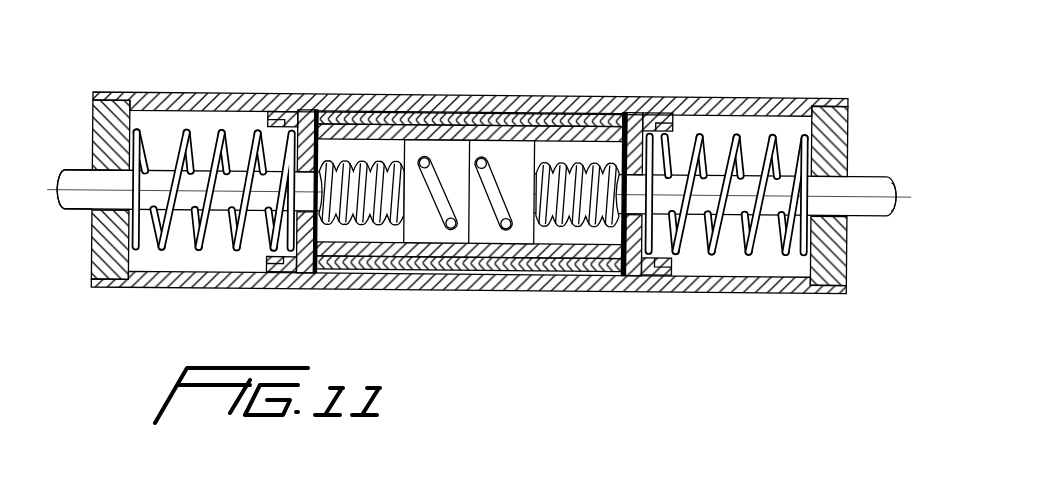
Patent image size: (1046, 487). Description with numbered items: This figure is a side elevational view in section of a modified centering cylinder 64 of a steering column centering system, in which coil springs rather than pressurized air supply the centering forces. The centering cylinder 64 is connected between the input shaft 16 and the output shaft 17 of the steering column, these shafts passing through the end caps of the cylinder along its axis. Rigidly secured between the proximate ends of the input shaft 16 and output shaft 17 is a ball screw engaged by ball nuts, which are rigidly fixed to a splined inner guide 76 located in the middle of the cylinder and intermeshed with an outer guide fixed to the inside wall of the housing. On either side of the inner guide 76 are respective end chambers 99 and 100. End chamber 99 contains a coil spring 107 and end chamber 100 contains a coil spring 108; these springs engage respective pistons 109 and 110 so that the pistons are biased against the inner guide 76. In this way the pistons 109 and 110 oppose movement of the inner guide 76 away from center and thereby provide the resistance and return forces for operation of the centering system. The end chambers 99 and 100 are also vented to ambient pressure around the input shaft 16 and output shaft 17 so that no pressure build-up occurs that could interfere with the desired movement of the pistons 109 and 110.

The input shaft 16 is at (868, 176).
The output shaft 17 is at (77, 211).
The centering cylinder 64 is at (613, 296).
The splined inner guide 76 is at (558, 145).
The end chamber 99 is at (714, 126).
The end chamber 100 is at (206, 117).
The coil spring 107 is at (775, 133).
The coil spring 108 is at (152, 128).
The piston 109 is at (676, 263).
The piston 110 is at (262, 261).